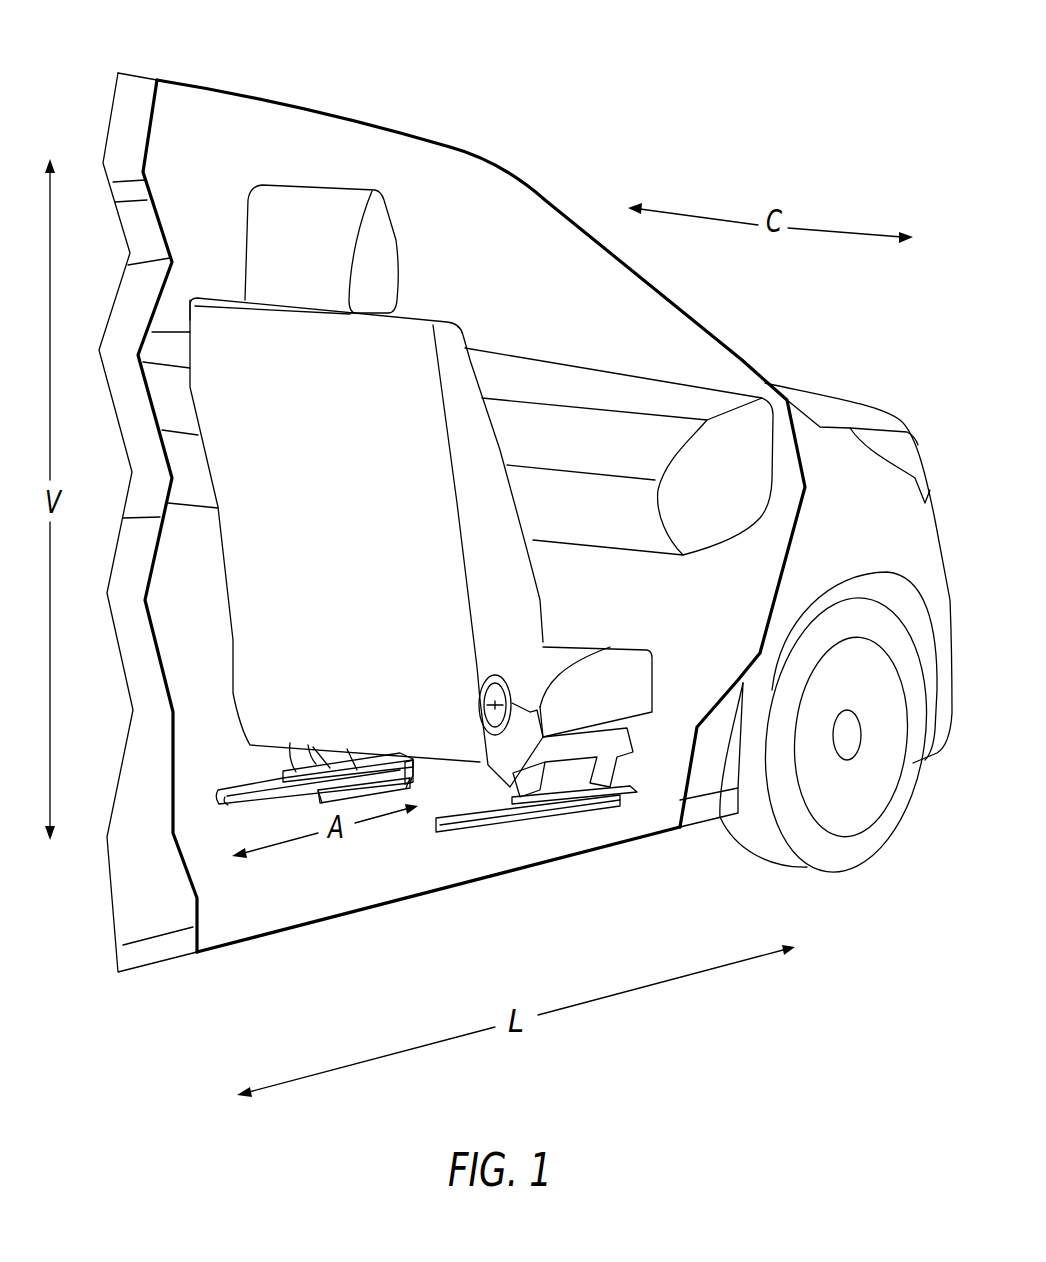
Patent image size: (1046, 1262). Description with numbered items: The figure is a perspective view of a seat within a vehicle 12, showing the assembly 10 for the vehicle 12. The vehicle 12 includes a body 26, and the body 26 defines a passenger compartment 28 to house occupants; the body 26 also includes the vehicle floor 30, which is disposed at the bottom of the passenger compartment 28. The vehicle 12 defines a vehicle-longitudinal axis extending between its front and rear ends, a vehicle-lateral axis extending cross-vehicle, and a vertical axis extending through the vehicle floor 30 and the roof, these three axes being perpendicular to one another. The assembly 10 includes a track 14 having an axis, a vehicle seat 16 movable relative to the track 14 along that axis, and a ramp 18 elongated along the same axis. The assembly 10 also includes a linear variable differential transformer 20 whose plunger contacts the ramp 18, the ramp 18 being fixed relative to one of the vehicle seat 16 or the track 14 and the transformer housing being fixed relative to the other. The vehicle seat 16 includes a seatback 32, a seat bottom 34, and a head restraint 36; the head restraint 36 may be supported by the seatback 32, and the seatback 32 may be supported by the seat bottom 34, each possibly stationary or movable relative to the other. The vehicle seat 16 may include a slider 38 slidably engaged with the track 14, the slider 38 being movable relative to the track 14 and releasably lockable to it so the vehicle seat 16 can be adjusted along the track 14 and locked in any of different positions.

The assembly 10 is at (525, 291).
The vehicle 12 is at (534, 118).
The track 14 is at (250, 790).
The vehicle seat 16 is at (504, 453).
The ramp 18 is at (316, 797).
The linear variable differential transformer 20 is at (413, 774).
The body 26 is at (143, 73).
The passenger compartment 28 is at (225, 139).
The vehicle floor 30 is at (380, 875).
The seatback 32 is at (409, 327).
The seat bottom 34 is at (637, 686).
The head restraint 36 is at (382, 226).
The slider 38 is at (365, 762).